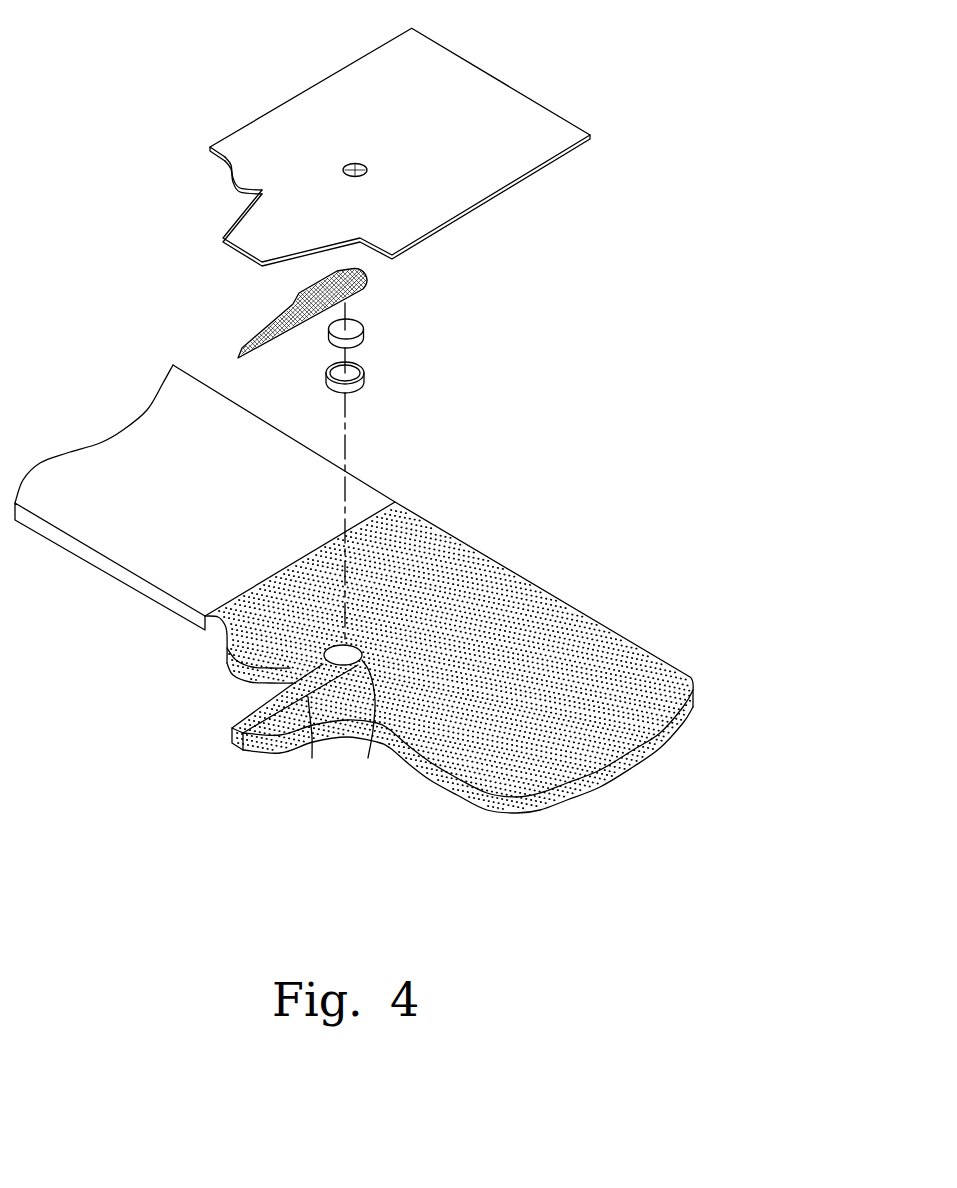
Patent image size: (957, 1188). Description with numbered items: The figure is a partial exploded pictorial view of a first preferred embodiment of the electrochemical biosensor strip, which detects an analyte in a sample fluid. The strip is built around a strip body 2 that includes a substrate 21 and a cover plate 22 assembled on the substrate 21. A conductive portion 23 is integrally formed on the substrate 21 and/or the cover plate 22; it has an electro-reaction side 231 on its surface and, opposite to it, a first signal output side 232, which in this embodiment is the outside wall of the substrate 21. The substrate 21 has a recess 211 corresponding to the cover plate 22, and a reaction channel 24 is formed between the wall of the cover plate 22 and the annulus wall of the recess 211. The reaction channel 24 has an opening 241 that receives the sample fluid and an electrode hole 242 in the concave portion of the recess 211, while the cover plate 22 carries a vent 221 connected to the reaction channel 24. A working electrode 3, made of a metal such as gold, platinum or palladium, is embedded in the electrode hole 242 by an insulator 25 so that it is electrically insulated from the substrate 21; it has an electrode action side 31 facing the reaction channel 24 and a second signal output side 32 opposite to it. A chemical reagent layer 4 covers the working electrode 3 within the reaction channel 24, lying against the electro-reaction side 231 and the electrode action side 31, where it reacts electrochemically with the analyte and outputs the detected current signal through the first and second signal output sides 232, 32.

The strip body 2 is at (361, 636).
The substrate 21 is at (417, 704).
The cover plate 22 is at (415, 139).
The vent 221 is at (355, 165).
The conductive portion 23 is at (468, 798).
The electro-reaction side 231 is at (293, 682).
The first signal output side 232 is at (457, 792).
The reaction channel 24 is at (259, 733).
The opening 241 is at (263, 713).
The electrode hole 242 is at (368, 758).
The recess 211 is at (310, 694).
The insulator 25 is at (364, 383).
The working electrode 3 is at (405, 327).
The electrode action side 31 is at (357, 322).
The second signal output side 32 is at (362, 344).
The chemical reagent layer 4 is at (383, 279).